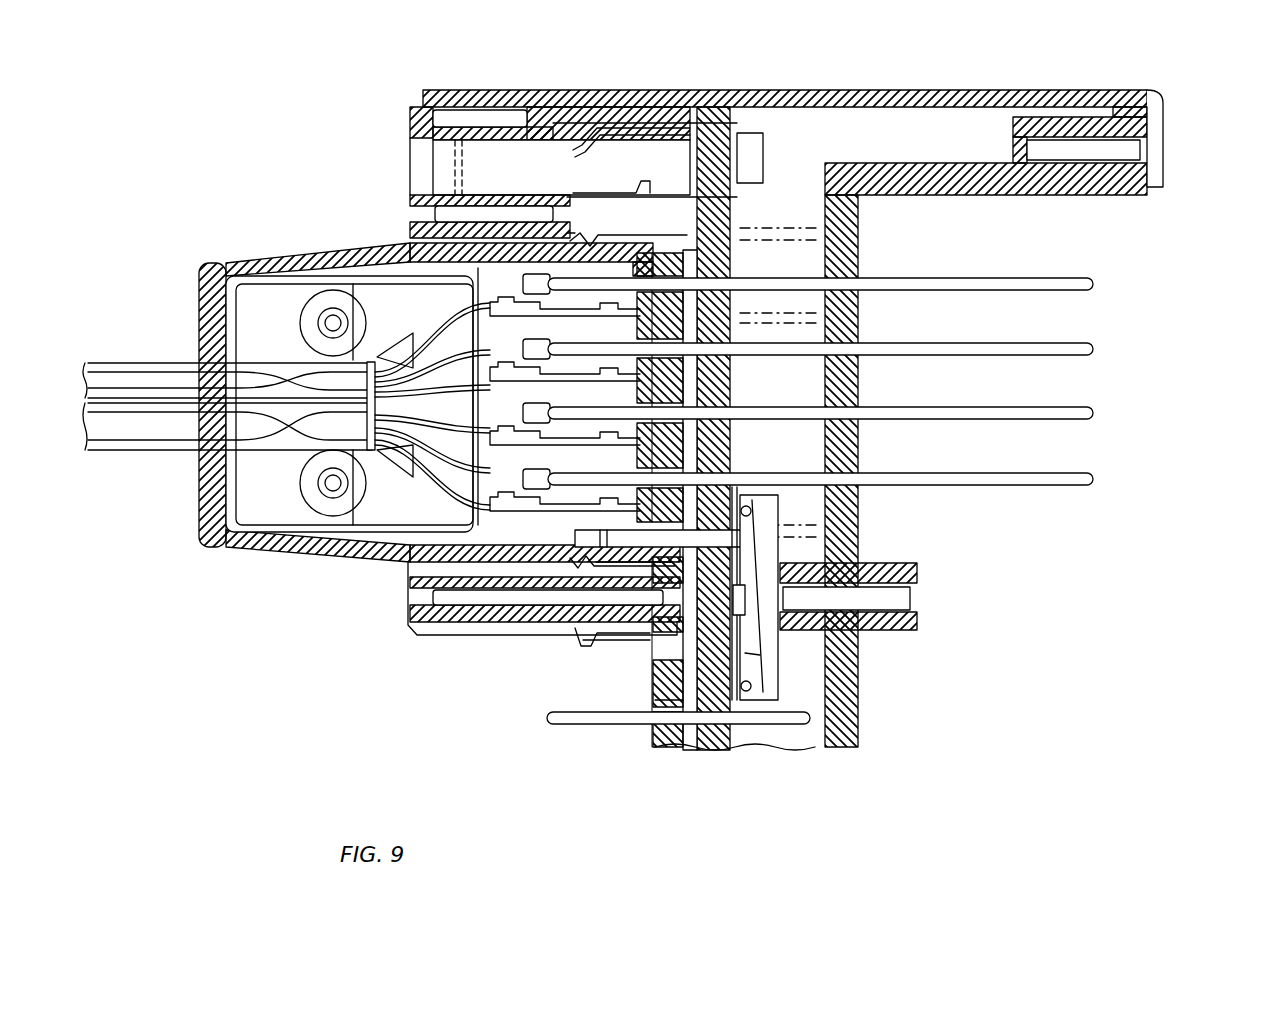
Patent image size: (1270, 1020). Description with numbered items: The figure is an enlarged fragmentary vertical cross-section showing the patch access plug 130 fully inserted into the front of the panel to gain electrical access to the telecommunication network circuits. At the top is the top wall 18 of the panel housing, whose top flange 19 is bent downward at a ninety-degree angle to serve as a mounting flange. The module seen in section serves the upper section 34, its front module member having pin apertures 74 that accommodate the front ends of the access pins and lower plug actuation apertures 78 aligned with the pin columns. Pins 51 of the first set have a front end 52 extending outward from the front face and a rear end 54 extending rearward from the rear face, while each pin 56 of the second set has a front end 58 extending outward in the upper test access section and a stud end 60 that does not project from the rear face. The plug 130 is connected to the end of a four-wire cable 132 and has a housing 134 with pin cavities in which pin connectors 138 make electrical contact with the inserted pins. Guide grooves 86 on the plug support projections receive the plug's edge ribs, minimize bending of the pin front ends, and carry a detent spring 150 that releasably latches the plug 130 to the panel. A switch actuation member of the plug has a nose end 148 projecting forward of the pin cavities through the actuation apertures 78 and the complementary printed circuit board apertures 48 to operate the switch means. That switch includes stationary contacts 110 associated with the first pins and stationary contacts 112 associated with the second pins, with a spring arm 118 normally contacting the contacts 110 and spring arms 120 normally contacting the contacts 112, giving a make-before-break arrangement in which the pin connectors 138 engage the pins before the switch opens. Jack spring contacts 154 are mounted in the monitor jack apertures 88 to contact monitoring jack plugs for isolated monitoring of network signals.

The top wall 18 is at (853, 90).
The top flange 19 is at (1164, 102).
The upper section 34 is at (400, 663).
The actuator apparatuses 48 is at (715, 665).
The terminal pins 51 is at (1030, 348).
The front end 52 is at (465, 345).
The rear end 54 is at (1097, 350).
The pin 56 is at (767, 720).
The front end 58 is at (548, 720).
The stud end 60 is at (811, 735).
The pin apertures 74 is at (690, 272).
The lower plug actuation apertures 78 is at (653, 662).
The guide grooves 86 is at (432, 247).
The monitor jack apertures 88 is at (442, 196).
The stationary contacts 110 is at (757, 503).
The stationary contacts 112 is at (750, 686).
The spring arm 118 is at (750, 511).
The spring arms 120 is at (755, 655).
The patch access plug 130 is at (258, 553).
The four-wire cable 132 is at (122, 380).
The housing 134 is at (283, 553).
The pin connectors 138 is at (485, 416).
The nose end 148 is at (760, 540).
The detent spring 150 is at (576, 642).
The jack spring contacts 154 is at (590, 148).